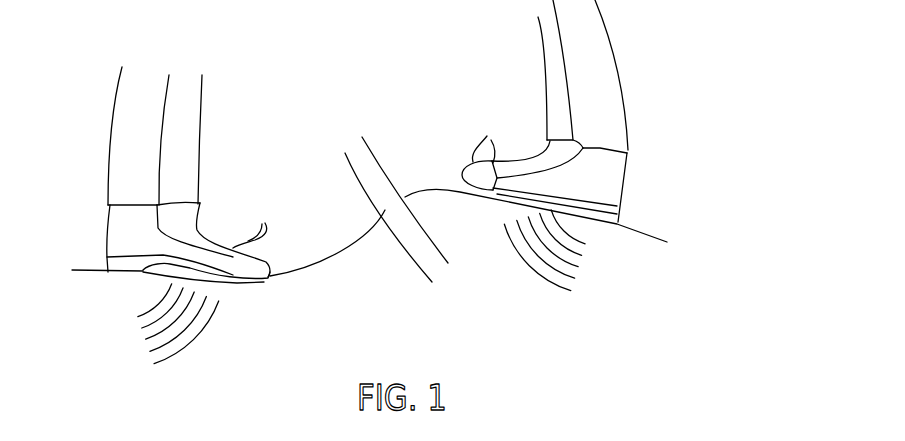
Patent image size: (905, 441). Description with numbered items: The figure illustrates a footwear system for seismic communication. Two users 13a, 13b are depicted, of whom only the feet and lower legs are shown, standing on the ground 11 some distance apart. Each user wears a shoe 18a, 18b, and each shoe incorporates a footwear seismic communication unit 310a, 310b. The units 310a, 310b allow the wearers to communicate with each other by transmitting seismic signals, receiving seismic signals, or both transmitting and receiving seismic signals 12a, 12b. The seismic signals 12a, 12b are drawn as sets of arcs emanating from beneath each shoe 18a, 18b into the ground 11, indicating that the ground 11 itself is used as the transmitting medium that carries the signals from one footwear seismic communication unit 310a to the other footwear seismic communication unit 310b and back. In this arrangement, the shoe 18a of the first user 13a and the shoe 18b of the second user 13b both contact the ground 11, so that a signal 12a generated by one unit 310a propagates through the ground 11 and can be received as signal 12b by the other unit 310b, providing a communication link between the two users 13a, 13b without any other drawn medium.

The ground 11 is at (363, 238).
The seismic signals 12a is at (532, 291).
The seismic signals 12b is at (130, 348).
The user 13a is at (543, 35).
The user 13b is at (108, 117).
The shoe 18a is at (478, 138).
The shoe 18b is at (259, 225).
The footwear seismic communication unit 310a is at (515, 130).
The footwear seismic communication unit 310b is at (231, 199).